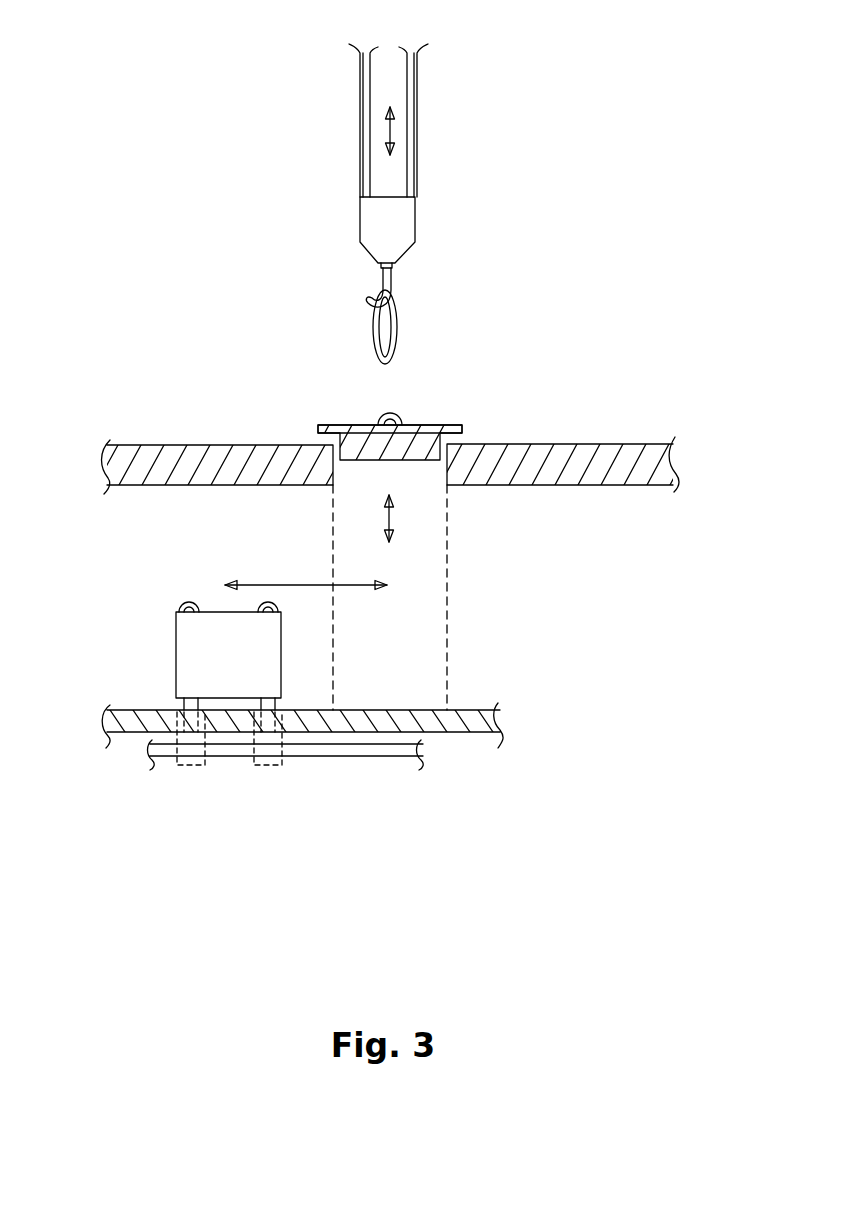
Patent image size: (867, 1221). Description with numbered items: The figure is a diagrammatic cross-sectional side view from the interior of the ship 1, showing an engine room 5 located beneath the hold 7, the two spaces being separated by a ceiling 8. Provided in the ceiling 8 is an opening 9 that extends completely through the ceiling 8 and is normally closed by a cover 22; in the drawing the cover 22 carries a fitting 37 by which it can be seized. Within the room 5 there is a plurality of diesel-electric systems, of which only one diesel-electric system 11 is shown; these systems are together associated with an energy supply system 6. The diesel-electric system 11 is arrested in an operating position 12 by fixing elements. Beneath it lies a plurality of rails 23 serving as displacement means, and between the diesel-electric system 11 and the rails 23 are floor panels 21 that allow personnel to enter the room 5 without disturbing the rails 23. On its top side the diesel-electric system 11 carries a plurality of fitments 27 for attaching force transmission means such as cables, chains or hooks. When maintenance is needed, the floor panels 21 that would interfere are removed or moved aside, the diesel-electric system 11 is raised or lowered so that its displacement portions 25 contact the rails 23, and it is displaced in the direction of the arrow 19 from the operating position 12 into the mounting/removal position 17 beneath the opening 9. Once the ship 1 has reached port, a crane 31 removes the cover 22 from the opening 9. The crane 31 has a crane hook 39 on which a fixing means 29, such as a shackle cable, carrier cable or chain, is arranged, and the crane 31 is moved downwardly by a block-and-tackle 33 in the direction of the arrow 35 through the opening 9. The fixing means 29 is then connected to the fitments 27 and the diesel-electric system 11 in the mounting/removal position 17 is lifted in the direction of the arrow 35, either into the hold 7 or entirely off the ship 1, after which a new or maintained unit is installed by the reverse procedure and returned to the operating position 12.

The ship 1 is at (617, 90).
The room 5 is at (137, 552).
The energy supply system 6 is at (470, 635).
The hold 7 is at (147, 278).
The ceiling 8 is at (140, 448).
The opening 9 is at (352, 436).
The diesel-electric system 11 is at (197, 662).
The operating position 12 is at (227, 825).
The mounting/removal position 17 is at (395, 822).
The arrow 19 is at (312, 584).
The floor panels 21 is at (453, 725).
The cover 22 is at (375, 426).
The rails 23 is at (403, 752).
The displacement portions 25 is at (242, 768).
The fitments 27 is at (182, 599).
The fixing means 29 is at (405, 330).
The crane 31 is at (432, 203).
The block-and-tackle 33 is at (365, 88).
The arrow 35 is at (383, 127).
The cover eyelet 37 is at (405, 405).
The crane hook 39 is at (400, 273).